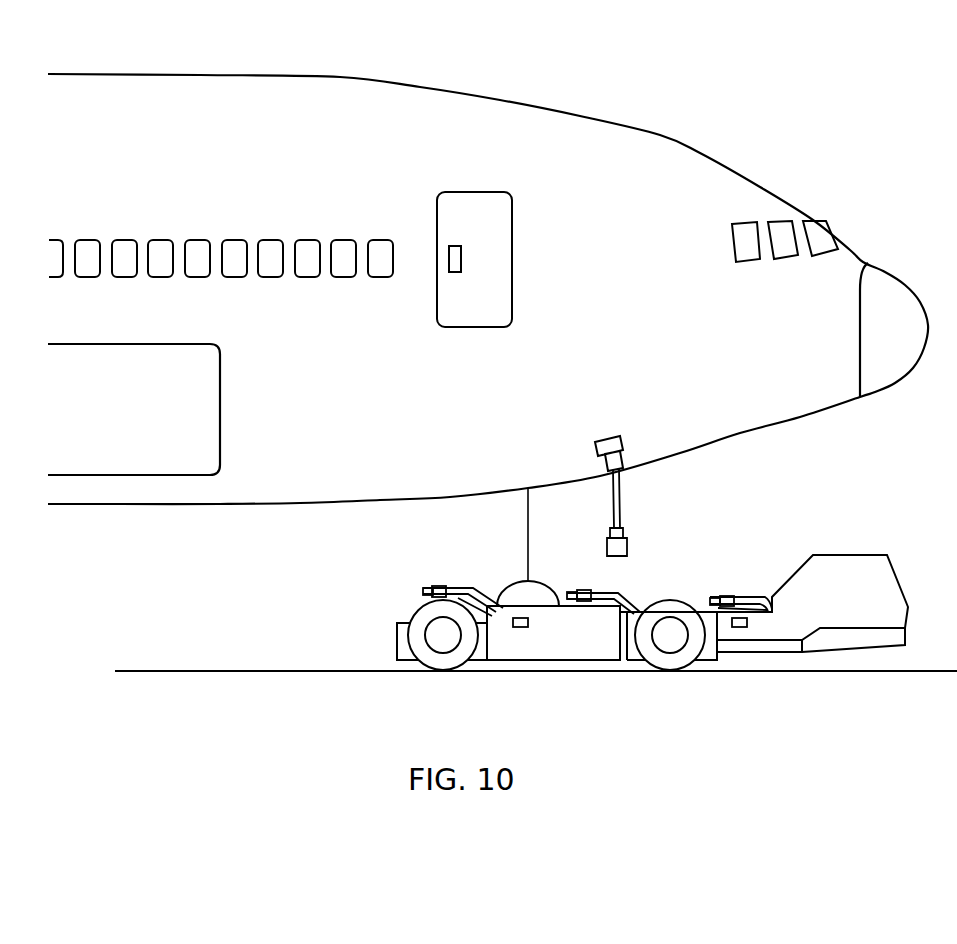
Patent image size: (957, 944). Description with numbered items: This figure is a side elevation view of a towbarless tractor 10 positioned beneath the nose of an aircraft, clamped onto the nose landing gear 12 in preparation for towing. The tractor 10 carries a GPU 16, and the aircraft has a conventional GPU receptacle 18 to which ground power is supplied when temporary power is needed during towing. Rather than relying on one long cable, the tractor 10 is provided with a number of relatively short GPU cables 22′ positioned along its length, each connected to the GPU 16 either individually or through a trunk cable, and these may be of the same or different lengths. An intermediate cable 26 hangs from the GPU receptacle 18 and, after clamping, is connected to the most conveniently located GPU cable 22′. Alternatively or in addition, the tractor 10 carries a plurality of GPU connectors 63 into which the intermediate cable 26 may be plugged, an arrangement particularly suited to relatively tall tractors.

The towbarless tractor 10 is at (663, 570).
The nose landing gear 12 is at (519, 574).
The GPU 16 is at (707, 605).
The GPU receptacle 18 is at (620, 440).
The intermediate cable 26 is at (622, 498).
The GPU cable 22′ is at (460, 583).
The GPU connector 63 is at (522, 628).